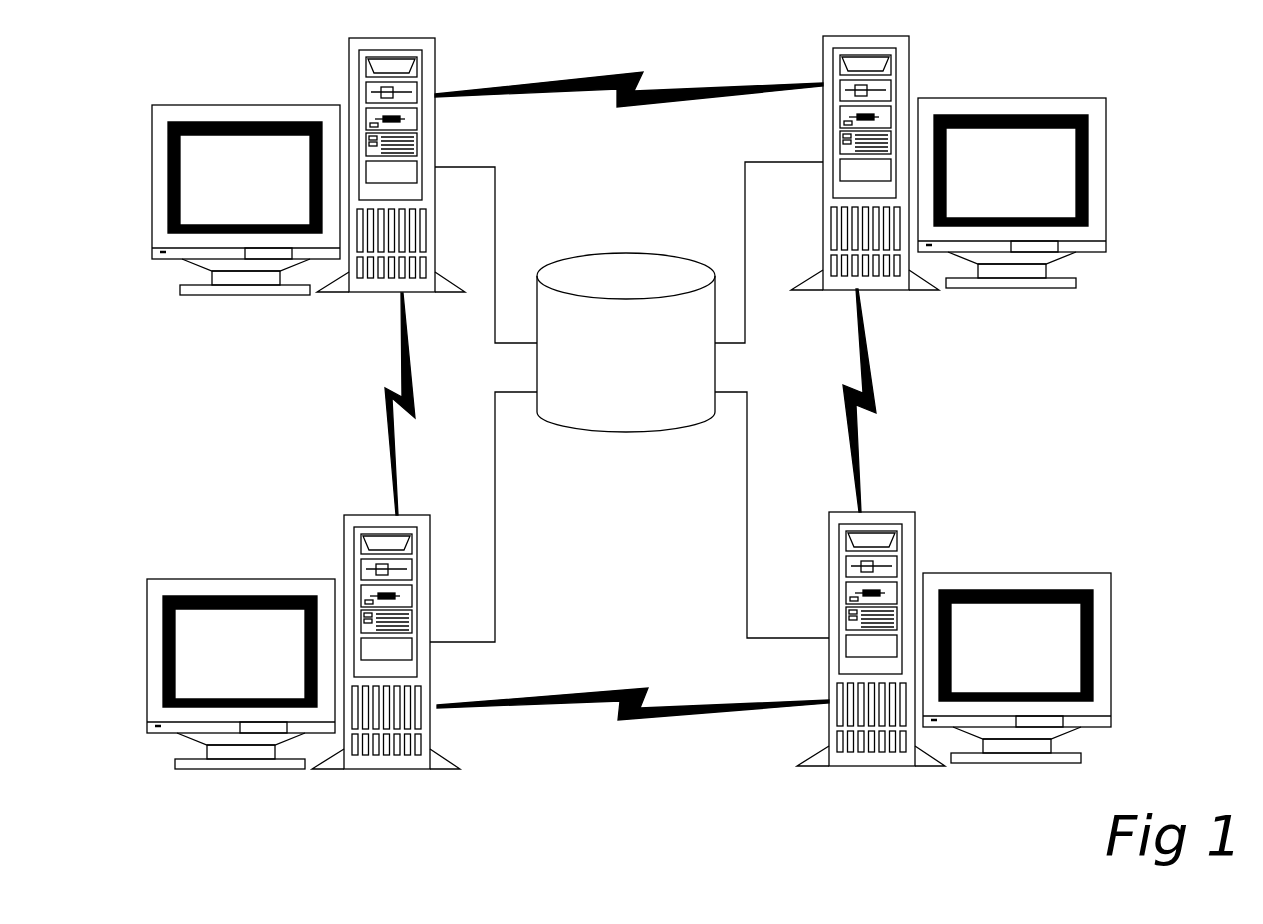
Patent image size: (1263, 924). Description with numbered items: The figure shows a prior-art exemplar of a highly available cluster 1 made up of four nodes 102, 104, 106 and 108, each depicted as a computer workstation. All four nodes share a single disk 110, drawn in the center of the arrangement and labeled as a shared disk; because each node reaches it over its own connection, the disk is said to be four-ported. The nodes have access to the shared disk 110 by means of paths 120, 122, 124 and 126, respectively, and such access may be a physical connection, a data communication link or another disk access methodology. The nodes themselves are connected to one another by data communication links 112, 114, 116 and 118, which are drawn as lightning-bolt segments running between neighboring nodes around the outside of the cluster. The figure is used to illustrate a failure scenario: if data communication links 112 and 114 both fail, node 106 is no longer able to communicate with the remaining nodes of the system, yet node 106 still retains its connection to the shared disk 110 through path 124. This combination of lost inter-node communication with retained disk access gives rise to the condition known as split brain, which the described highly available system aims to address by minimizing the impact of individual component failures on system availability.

The cluster 1 is at (1170, 245).
The node 102 is at (155, 103).
The node 104 is at (990, 98).
The node 106 is at (1110, 597).
The node 108 is at (147, 660).
The shared disk 110 is at (620, 432).
The data communication link 112 is at (868, 372).
The data communication link 114 is at (697, 715).
The data communication link 116 is at (385, 395).
The data communication link 118 is at (578, 78).
The path 120 is at (519, 196).
The path 122 is at (745, 190).
The path 124 is at (747, 497).
The path 126 is at (497, 553).